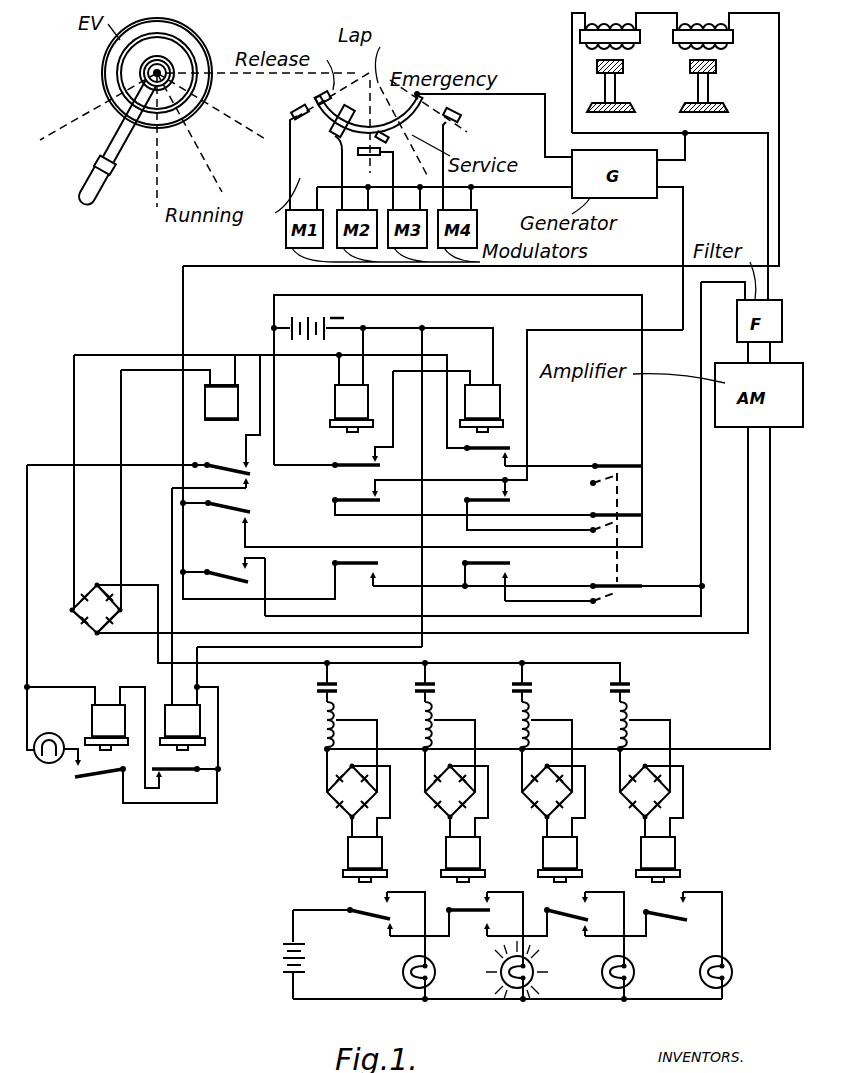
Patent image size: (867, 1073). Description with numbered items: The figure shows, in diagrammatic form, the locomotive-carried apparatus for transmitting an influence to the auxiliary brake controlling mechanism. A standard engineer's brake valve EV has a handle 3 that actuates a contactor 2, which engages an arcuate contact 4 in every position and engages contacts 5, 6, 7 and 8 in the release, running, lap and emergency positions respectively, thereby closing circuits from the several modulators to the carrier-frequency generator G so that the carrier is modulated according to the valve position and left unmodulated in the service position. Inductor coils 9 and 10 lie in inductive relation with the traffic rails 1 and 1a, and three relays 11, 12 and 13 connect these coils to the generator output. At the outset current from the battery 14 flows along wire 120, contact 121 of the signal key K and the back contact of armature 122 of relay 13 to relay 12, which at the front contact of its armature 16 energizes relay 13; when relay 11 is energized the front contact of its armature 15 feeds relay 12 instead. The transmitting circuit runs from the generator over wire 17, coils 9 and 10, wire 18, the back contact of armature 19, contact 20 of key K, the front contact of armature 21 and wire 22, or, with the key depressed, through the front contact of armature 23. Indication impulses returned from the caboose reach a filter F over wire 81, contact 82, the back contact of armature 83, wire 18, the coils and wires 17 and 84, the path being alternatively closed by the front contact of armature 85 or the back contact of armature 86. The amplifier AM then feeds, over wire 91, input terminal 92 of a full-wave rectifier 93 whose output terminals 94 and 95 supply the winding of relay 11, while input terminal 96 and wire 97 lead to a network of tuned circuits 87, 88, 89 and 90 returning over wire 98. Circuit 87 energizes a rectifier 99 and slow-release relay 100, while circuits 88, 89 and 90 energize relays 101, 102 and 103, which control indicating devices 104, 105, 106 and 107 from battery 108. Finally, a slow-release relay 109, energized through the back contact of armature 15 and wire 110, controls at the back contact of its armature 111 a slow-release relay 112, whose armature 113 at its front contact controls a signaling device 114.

The traffic rail 1 is at (617, 88).
The traffic rail 1a is at (712, 86).
The contactor 2 is at (325, 138).
The handle 3 is at (98, 170).
The arcuate contact 4 is at (312, 91).
The contact 5 is at (298, 118).
The contact 6 is at (364, 156).
The contact 7 is at (386, 140).
The contact 8 is at (440, 124).
The inductor coil 9 is at (622, 27).
The inductor coil 10 is at (718, 28).
The relay 11 is at (232, 384).
The relay 12 is at (335, 396).
The relay 13 is at (492, 395).
The battery 14 is at (318, 331).
The armature 15 is at (238, 466).
The armature 16 is at (368, 462).
The wire 17 is at (583, 70).
The wire 18 is at (660, 268).
The armature 19 is at (243, 500).
The contact 20 is at (636, 518).
The armature 21 is at (368, 498).
The wire 22 is at (590, 328).
The armature 23 is at (508, 498).
The wire 81 is at (712, 540).
The contact 82 is at (612, 590).
The armature 83 is at (350, 572).
The wire 84 is at (778, 273).
The armature 85 is at (232, 576).
The armature 86 is at (508, 566).
The tuned circuit 87 is at (347, 726).
The tuned circuit 88 is at (445, 726).
The tuned circuit 89 is at (542, 726).
The tuned circuit 90 is at (640, 727).
The wire 91 is at (700, 637).
The input terminal 92 is at (96, 636).
The full-wave rectifier 93 is at (85, 626).
The output terminal 94 is at (70, 610).
The output terminal 95 is at (122, 613).
The input terminal 96 is at (97, 582).
The wire 97 is at (292, 666).
The wire 98 is at (752, 745).
The full-wave rectifier 99 is at (325, 792).
The slow-release relay 100 is at (352, 846).
The relay 101 is at (446, 850).
The relay 102 is at (548, 850).
The relay 103 is at (652, 845).
The indicating device 104 is at (406, 980).
The indicating device 105 is at (497, 982).
The indicating device 106 is at (606, 981).
The indicating device 107 is at (705, 981).
The battery 108 is at (312, 952).
The slow-release relay 109 is at (195, 725).
The wire 110 is at (424, 598).
The armature 111 is at (172, 772).
The slow-release relay 112 is at (100, 722).
The armature 113 is at (96, 775).
The signaling device 114 is at (44, 763).
The wire 120 is at (643, 392).
The contact 121 is at (627, 468).
The armature 122 is at (500, 456).